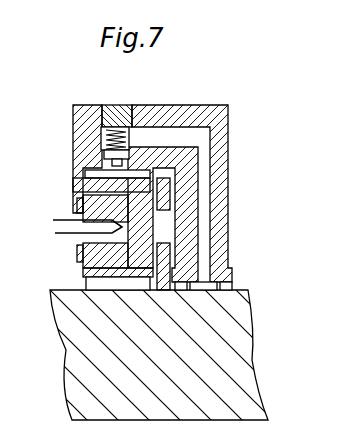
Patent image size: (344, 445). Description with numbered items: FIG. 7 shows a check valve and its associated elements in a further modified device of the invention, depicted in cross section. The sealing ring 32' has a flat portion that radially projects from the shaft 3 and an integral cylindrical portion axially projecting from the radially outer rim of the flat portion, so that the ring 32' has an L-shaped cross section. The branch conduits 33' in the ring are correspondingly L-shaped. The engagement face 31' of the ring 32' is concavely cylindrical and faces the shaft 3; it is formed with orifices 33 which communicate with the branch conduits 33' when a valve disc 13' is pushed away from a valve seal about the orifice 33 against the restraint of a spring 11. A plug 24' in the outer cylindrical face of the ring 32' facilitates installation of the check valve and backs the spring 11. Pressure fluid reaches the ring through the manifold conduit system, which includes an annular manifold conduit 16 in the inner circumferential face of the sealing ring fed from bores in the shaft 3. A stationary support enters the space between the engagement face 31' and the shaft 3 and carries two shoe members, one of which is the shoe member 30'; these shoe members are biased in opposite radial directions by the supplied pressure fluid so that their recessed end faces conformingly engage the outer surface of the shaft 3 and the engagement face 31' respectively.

The shaft 3 is at (75, 333).
The helical compression spring 11 is at (100, 132).
The valve disc 13′ is at (100, 142).
The annular manifold conduit 16 is at (217, 283).
The plug 24′ is at (122, 105).
The shoe member 30′ is at (83, 257).
The engagement face 31′ is at (73, 172).
The sealing ring 32′ is at (212, 197).
The orifice 33 is at (102, 160).
The branch conduit 33′ is at (200, 158).